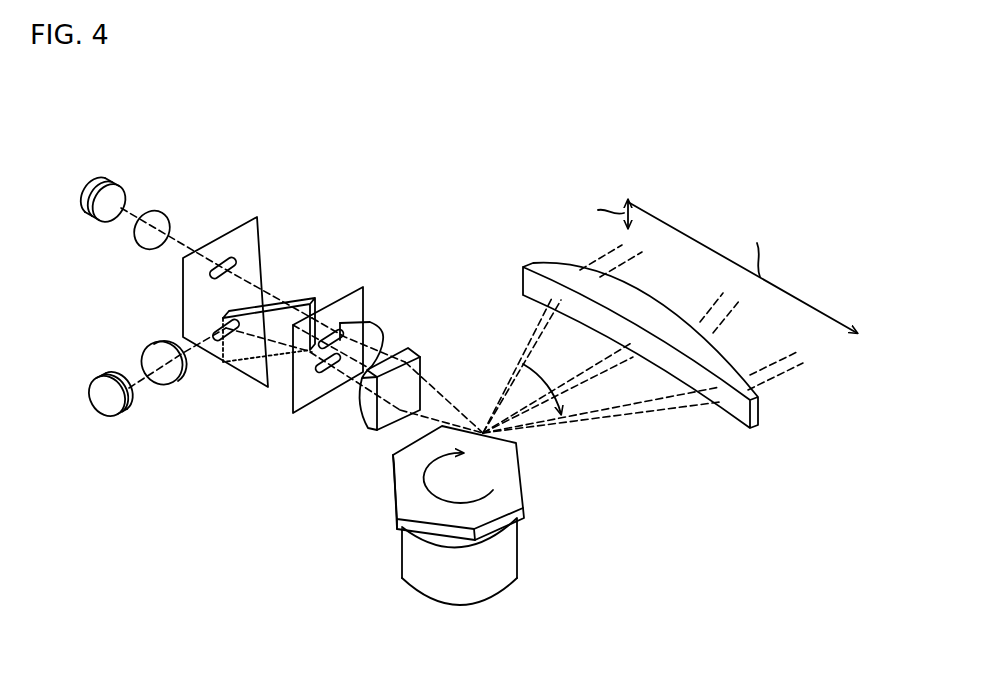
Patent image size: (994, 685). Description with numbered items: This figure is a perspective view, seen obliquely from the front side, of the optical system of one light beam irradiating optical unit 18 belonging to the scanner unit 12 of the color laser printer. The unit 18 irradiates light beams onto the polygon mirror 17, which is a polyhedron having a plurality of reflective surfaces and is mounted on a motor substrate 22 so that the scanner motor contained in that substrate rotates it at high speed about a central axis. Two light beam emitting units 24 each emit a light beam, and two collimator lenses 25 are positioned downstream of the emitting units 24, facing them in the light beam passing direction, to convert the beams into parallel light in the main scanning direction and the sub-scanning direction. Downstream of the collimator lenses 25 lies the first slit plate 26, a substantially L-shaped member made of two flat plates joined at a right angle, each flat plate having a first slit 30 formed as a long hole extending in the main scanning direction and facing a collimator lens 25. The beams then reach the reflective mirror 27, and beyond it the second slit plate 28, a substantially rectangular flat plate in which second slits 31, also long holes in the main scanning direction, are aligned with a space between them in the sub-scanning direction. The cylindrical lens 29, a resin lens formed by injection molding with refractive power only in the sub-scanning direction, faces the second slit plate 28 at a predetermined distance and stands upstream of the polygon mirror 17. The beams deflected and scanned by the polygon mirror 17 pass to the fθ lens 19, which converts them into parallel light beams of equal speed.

The scanner unit 12 is at (463, 665).
The polygon mirror 17 is at (510, 465).
The light beam irradiating optical unit 18 is at (225, 401).
The fθ lens 19 is at (728, 408).
The motor substrate 22 is at (511, 556).
The light beam emitting unit 24 is at (122, 199).
The collimator lens 25 is at (163, 221).
The first slit plate 26 is at (252, 240).
The reflective mirror 27 is at (303, 282).
The second slit plate 28 is at (357, 302).
The cylindrical lens 29 is at (413, 368).
The first slit 30 is at (236, 257).
The second slit 31 is at (366, 370).